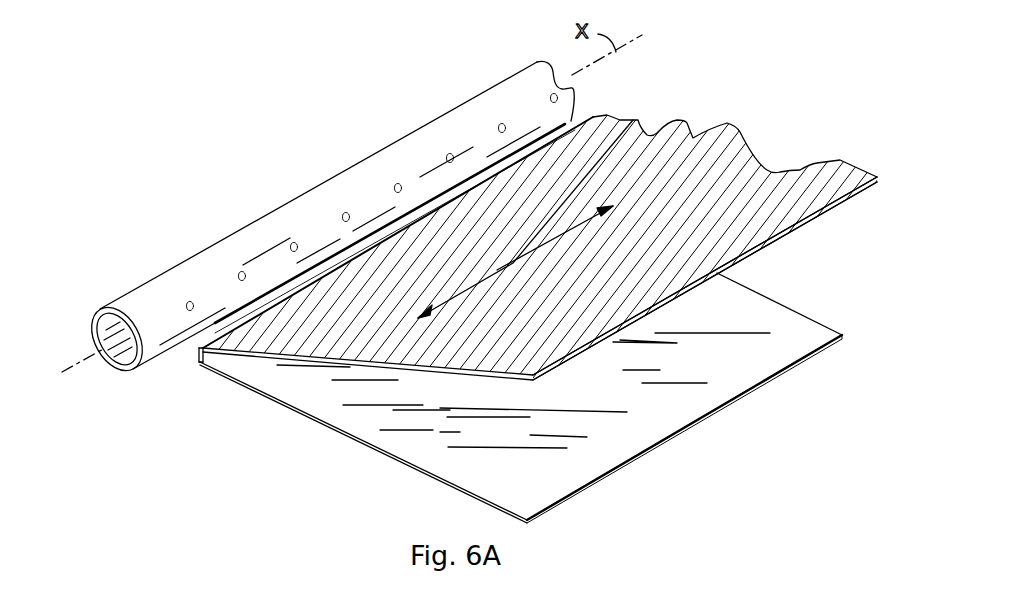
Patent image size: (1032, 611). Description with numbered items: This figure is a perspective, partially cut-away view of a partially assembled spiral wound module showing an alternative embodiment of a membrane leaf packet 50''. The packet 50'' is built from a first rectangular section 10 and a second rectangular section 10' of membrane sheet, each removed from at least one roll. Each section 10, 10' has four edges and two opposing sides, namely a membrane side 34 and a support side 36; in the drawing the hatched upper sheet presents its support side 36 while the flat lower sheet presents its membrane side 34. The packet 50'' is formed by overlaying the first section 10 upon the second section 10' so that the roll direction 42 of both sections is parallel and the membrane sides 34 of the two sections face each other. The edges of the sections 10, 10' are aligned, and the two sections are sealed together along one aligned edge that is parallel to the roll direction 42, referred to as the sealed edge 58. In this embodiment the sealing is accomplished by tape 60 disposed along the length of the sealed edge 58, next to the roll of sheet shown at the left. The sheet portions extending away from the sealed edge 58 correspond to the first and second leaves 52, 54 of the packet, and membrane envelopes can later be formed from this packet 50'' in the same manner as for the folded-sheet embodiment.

The first rectangular section 10 is at (559, 250).
The second rectangular section 10' is at (549, 356).
The membrane side 34 is at (670, 425).
The support side 36 is at (740, 150).
The roll direction 42 is at (640, 116).
The membrane leaf packet 50'' is at (327, 269).
The first leaf 52 is at (832, 180).
The second leaf 54 is at (817, 317).
The sealed edge 58 is at (200, 363).
The tape 60 is at (230, 335).